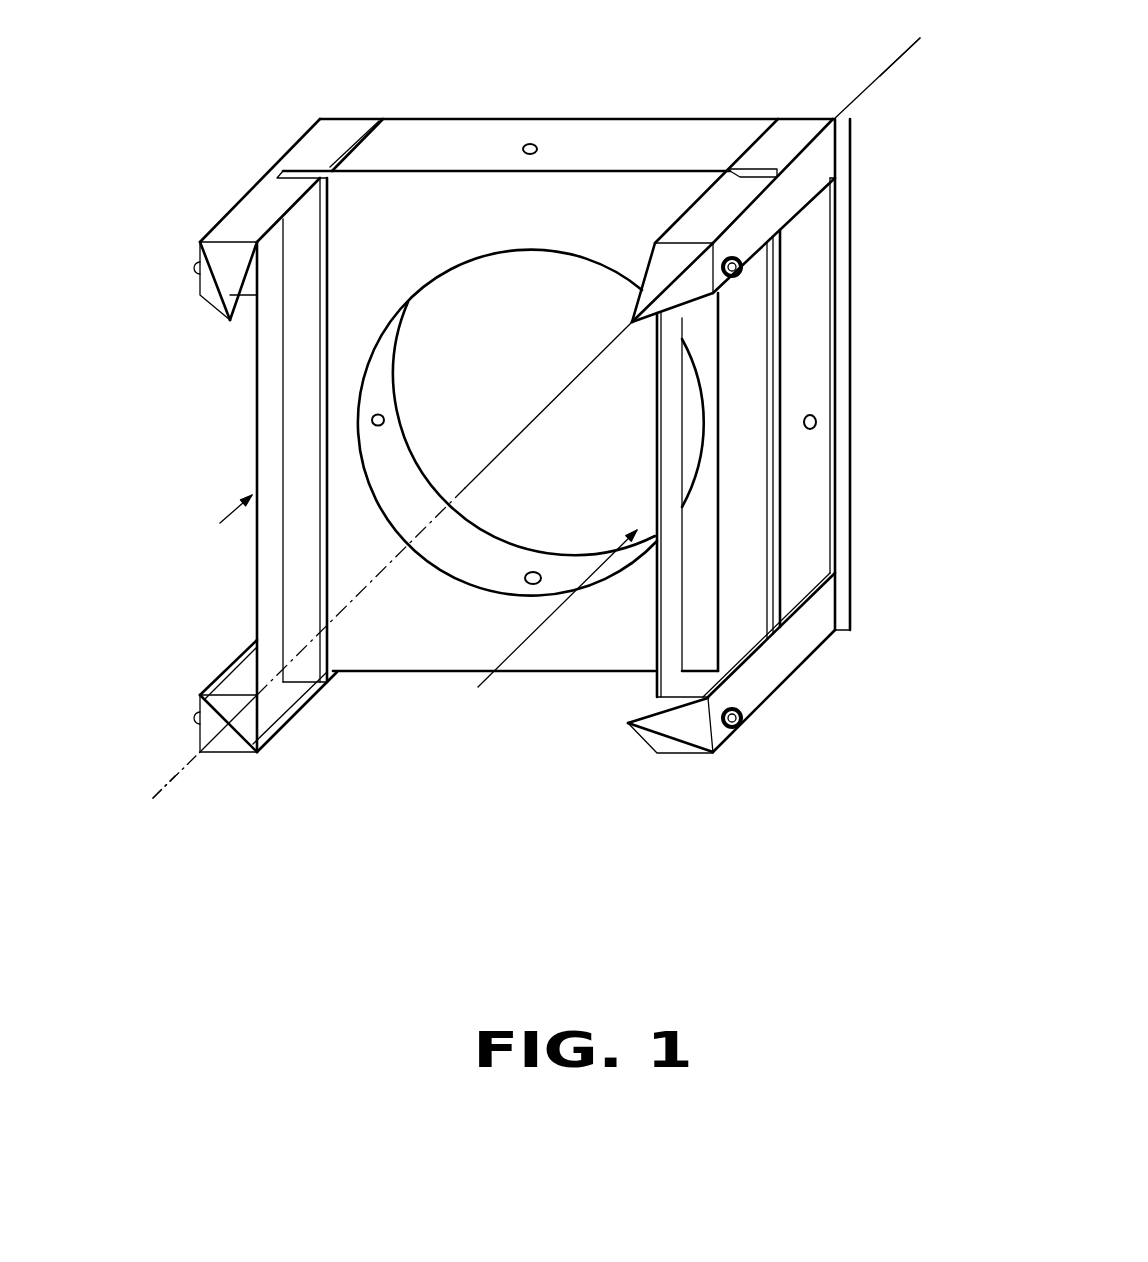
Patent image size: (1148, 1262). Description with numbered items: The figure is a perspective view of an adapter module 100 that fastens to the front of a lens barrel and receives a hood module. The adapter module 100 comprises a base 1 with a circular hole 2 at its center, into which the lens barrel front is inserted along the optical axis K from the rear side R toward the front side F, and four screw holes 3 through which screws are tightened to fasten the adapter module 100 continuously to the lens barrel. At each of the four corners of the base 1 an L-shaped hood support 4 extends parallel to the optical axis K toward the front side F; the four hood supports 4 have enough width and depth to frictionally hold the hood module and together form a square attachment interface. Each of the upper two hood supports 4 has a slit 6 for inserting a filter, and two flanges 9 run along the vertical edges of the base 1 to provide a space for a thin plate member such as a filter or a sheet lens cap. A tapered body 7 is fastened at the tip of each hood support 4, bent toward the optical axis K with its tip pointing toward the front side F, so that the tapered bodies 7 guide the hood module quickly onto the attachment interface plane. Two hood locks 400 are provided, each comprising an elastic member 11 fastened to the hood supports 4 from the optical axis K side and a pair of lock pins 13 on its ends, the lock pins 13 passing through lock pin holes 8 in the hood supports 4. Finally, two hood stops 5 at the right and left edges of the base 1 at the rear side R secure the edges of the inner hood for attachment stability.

The adapter module 100 is at (183, 122).
The base 1 is at (603, 633).
The circular hole 2 is at (530, 249).
The screw holes 3 is at (530, 143).
The hood supports 4 is at (345, 130).
The hood stops 5 is at (321, 117).
The slit 6 is at (300, 177).
The tapered bodies 7 is at (230, 262).
The lock pin hole 8 is at (732, 279).
The flanges 9 is at (295, 373).
The elastic member 11 is at (257, 323).
The lock pins 13 is at (195, 262).
The hood locks 400 is at (388, 615).
The optical axis K is at (530, 422).
The rear side R is at (915, 38).
The front side F is at (143, 815).